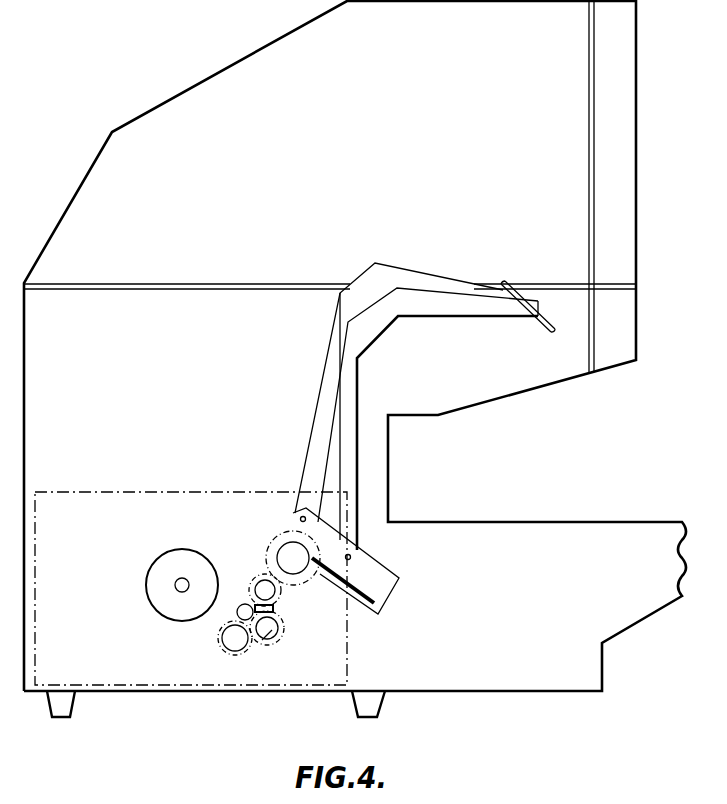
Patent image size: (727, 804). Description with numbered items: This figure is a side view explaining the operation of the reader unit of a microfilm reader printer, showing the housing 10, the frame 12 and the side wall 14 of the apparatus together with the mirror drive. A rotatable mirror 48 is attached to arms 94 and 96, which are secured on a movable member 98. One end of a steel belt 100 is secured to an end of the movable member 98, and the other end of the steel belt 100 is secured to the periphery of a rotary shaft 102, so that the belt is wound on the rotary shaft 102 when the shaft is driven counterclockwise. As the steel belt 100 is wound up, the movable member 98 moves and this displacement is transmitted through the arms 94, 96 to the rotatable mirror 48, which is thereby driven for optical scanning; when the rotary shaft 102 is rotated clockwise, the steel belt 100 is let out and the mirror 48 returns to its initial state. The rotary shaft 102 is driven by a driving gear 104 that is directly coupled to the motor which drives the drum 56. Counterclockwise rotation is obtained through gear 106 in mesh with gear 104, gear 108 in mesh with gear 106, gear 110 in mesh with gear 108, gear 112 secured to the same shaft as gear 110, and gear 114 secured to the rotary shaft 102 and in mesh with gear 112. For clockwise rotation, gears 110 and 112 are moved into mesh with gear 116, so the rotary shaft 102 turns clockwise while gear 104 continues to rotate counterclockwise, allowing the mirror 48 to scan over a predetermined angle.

The housing 10 is at (213, 88).
The frame 12 is at (155, 683).
The side wall strip 14 is at (594, 74).
The rotatable mirror 48 is at (503, 288).
The drum 56 is at (153, 570).
The arm 94 is at (348, 395).
The arm 96 is at (322, 397).
The movable member 98 is at (370, 582).
The steel belt 100 is at (373, 596).
The rotary shaft 102 is at (287, 553).
The driving gear 104 is at (232, 660).
The gear 106 is at (265, 655).
The gear 108 is at (240, 612).
The gear 110 is at (288, 598).
The gear 112 is at (260, 570).
The gear 114 is at (270, 550).
The gear 116 is at (288, 628).